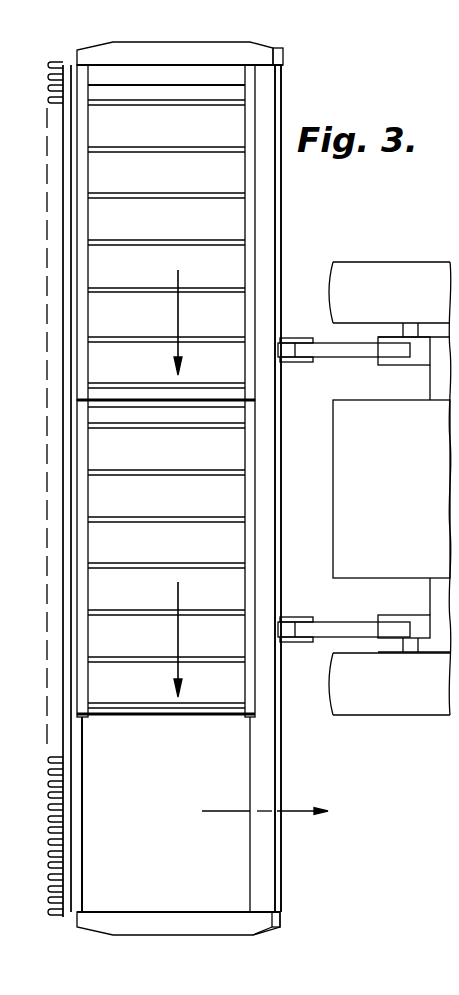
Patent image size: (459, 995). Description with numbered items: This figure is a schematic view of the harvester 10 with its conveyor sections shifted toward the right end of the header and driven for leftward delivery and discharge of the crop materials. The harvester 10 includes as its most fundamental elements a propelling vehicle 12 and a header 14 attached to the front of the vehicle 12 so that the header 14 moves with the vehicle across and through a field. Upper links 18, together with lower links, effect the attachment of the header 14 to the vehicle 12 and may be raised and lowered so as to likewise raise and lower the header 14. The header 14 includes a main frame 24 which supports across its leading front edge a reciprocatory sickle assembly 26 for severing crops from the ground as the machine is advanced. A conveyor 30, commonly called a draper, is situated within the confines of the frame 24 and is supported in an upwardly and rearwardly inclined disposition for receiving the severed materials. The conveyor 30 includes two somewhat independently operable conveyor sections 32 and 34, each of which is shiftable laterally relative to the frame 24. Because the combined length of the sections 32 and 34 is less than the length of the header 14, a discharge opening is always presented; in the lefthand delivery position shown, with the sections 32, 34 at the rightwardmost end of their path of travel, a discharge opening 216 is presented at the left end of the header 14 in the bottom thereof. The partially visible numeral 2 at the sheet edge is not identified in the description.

The harvester 10 is at (341, 219).
The propelling vehicle 12 is at (321, 539).
The header 14 is at (295, 751).
The upper links 18 is at (342, 352).
The main frame 24 is at (291, 434).
The reciprocatory sickle assembly 26 is at (47, 796).
The conveyor 30 is at (72, 190).
The conveyor section 32 is at (229, 678).
The conveyor section 34 is at (243, 116).
The discharge opening 216 is at (238, 855).
The partial numeral 2 is at (0, 392).